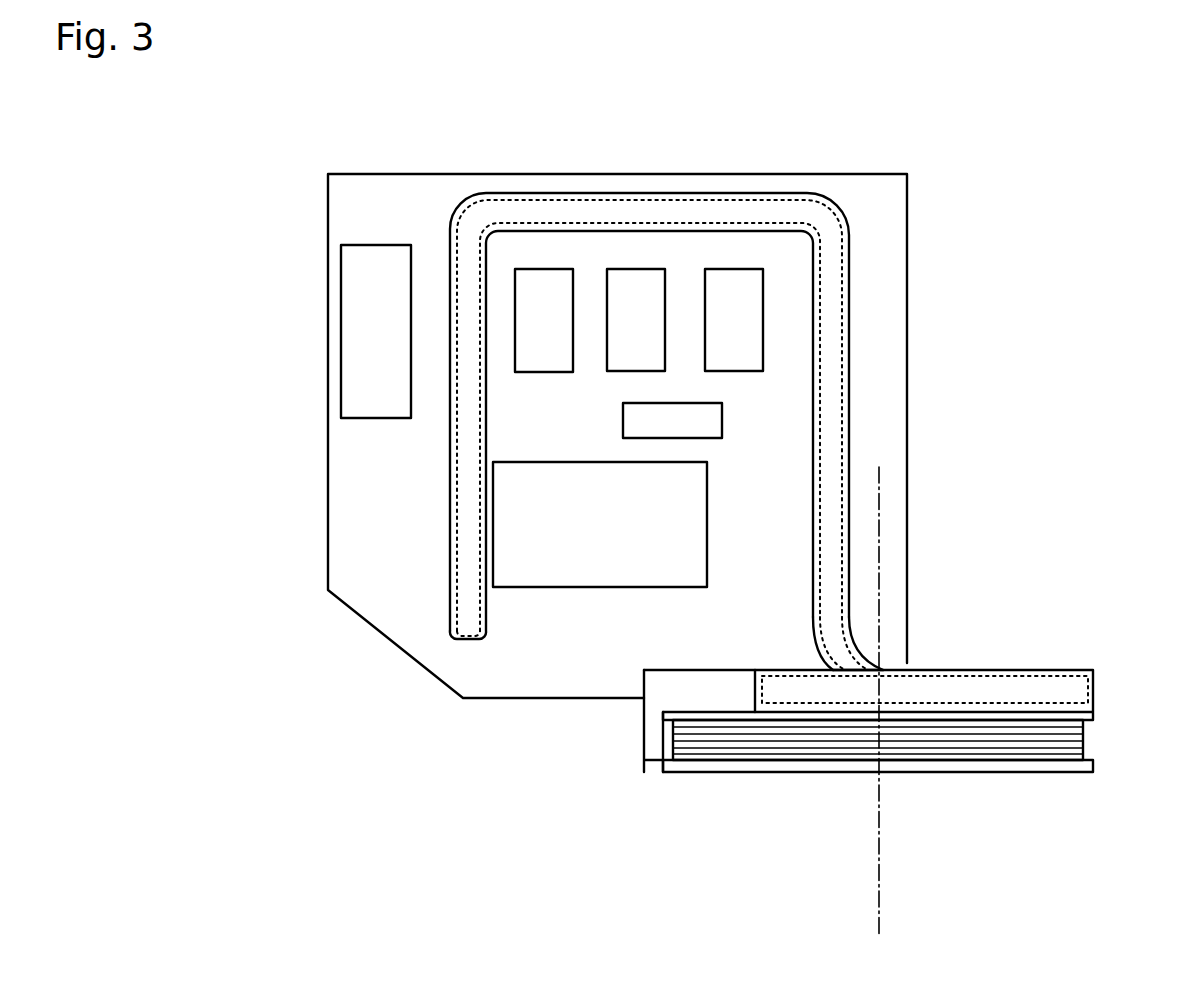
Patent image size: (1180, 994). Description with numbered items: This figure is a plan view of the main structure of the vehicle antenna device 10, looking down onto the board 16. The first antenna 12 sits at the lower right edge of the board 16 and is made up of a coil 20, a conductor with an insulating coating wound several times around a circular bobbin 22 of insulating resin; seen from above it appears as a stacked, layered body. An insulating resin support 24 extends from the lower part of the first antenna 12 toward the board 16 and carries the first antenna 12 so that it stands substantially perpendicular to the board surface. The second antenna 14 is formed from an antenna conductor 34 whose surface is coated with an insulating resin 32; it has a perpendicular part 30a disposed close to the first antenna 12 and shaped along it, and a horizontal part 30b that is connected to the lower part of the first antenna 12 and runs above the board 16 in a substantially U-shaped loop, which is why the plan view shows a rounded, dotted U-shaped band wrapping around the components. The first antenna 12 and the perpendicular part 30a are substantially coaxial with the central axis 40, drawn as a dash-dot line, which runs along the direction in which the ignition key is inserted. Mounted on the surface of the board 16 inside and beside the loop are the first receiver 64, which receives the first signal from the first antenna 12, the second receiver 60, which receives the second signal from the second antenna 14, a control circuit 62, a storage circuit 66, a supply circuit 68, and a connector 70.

The vehicle antenna device 10 is at (912, 137).
The first antenna 12 is at (808, 749).
The second antenna 14 is at (743, 435).
The board 16 is at (890, 305).
The coil 20 is at (672, 742).
The bobbin 22 is at (667, 762).
The support 24 is at (655, 685).
The perpendicular part 30a is at (928, 677).
The horizontal part 30b is at (846, 589).
The insulating resin 32 is at (1055, 675).
The antenna conductor 34 is at (1093, 693).
The central axis 40 is at (879, 880).
The second receiver 60 is at (577, 572).
The control circuit 62 is at (710, 424).
The first receiver 64 is at (745, 362).
The storage circuit 66 is at (625, 360).
The supply circuit 68 is at (542, 362).
The connector 70 is at (375, 412).